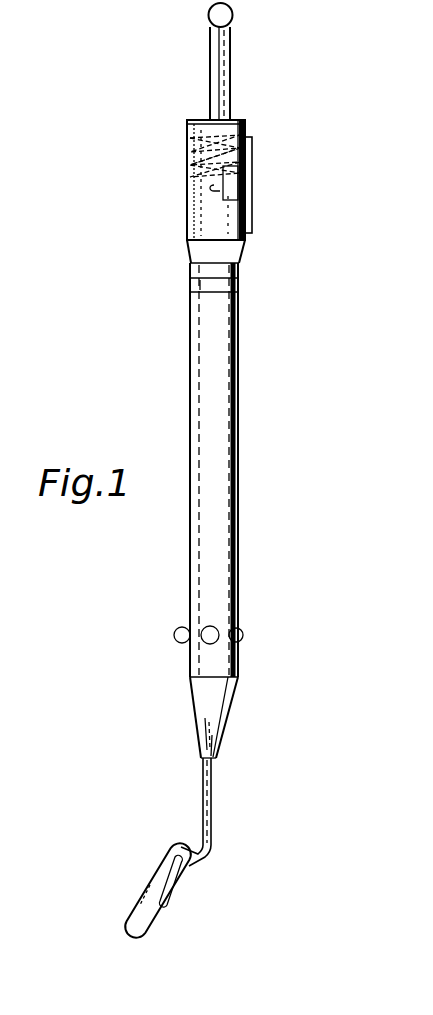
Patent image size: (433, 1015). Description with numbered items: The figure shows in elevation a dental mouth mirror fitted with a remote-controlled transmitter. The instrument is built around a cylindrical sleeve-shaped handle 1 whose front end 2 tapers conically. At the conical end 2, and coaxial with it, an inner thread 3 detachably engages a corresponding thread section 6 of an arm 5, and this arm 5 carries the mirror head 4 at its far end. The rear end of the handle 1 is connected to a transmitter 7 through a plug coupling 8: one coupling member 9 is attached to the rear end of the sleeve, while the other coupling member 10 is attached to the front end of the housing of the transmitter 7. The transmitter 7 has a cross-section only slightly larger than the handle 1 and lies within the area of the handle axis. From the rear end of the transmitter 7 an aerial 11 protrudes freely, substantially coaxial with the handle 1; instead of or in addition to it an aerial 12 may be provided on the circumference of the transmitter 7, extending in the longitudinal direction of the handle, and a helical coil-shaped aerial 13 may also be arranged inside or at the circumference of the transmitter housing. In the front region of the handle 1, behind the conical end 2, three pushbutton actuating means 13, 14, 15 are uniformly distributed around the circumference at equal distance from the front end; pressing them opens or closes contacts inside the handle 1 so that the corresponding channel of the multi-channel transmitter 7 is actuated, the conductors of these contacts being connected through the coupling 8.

The sleeve-shaped handle 1 is at (233, 432).
The front end 2 is at (230, 702).
The inner thread 3 is at (218, 743).
The mirror head 4 is at (140, 937).
The arm 5 is at (212, 820).
The thread section 6 is at (204, 732).
The transmitter 7 is at (250, 197).
The plug coupling 8 is at (242, 282).
The coupling member 9 is at (222, 283).
The coupling member 10 is at (220, 272).
The aerial 11 is at (222, 81).
The aerial 12 is at (250, 174).
The coil-shaped aerial 13 is at (241, 150).
The actuating means 14 is at (217, 630).
The actuating means 15 is at (177, 630).